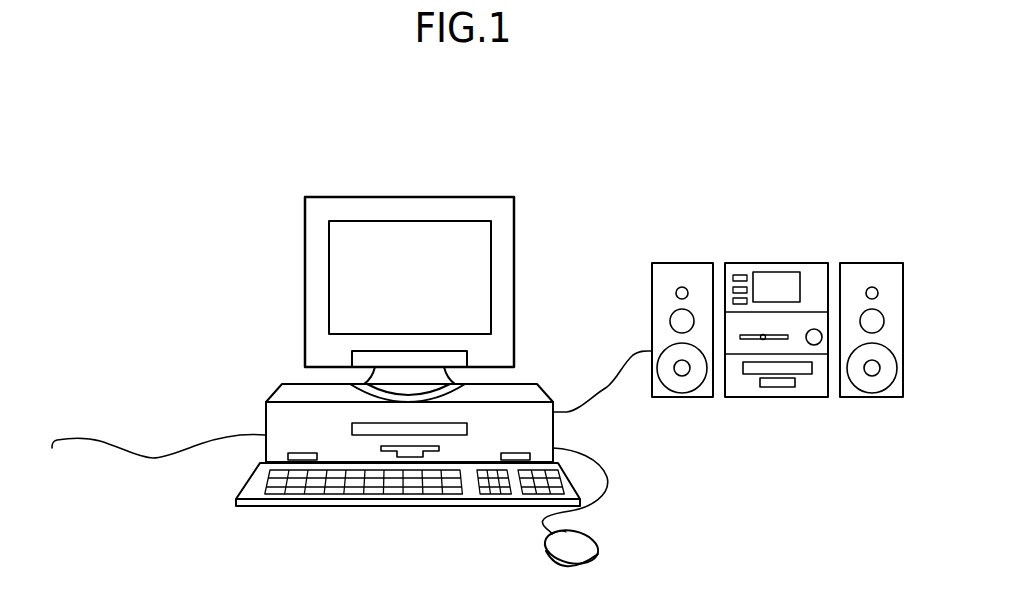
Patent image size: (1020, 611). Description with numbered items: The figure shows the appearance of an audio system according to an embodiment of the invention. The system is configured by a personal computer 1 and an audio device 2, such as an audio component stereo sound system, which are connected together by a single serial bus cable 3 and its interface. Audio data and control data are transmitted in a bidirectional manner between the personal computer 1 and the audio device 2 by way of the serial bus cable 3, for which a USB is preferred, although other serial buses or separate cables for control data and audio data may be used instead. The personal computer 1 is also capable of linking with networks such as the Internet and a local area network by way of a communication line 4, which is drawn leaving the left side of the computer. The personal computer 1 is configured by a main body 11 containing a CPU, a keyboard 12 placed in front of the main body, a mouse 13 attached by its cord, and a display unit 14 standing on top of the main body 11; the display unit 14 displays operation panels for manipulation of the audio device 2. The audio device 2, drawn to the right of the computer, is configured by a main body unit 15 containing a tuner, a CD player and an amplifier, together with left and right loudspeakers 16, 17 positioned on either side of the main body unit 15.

The personal computer 1 is at (430, 176).
The audio device 2 is at (781, 234).
The serial bus cable 3 is at (596, 396).
The communication line 4 is at (127, 450).
The main body 11 is at (275, 392).
The keyboard 12 is at (319, 507).
The mouse 13 is at (584, 544).
The display unit 14 is at (515, 260).
The main body unit 15 is at (807, 397).
The left loudspeaker 16 is at (694, 263).
The right loudspeaker 17 is at (876, 263).